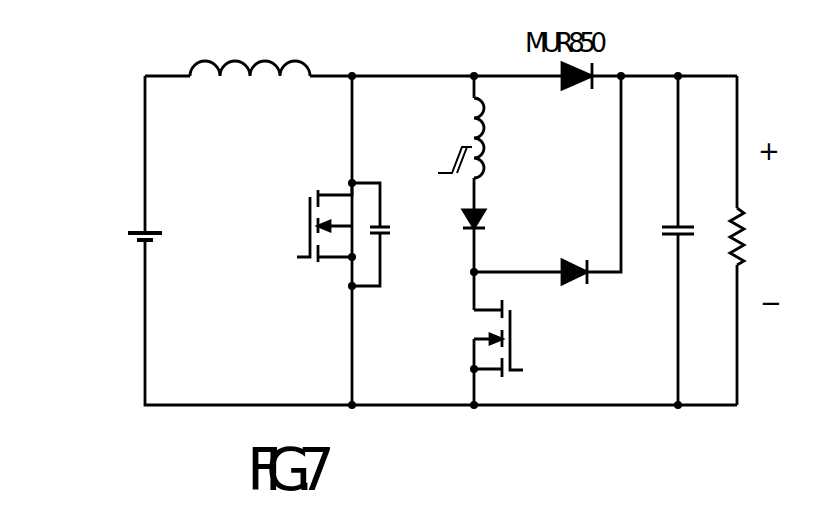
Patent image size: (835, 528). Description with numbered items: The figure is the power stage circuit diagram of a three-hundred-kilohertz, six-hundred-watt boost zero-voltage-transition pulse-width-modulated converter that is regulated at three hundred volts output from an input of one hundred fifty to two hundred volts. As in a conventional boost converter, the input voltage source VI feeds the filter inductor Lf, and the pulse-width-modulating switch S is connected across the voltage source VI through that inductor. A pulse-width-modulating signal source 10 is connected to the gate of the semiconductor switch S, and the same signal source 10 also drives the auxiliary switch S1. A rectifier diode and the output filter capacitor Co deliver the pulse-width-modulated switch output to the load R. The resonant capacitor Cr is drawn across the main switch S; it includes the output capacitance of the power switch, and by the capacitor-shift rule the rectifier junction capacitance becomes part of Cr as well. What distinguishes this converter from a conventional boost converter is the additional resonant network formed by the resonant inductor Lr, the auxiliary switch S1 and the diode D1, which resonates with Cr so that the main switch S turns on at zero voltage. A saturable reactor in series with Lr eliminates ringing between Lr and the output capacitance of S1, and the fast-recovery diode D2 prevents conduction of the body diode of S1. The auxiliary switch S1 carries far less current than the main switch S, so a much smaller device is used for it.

The pulse-width-modulating signal source 10 is at (406, 294).
The pulse-width-modulating switch S is at (284, 240).
The auxiliary switch S1 is at (535, 352).
The diode D1 is at (607, 301).
The fast-recovery diode D2 is at (524, 220).
The filter inductor Lf is at (250, 71).
The resonant inductor Lr is at (496, 133).
The resonant capacitor Cr is at (398, 259).
The filter capacitor Co is at (698, 192).
The load R is at (765, 242).
The voltage source VI is at (95, 237).